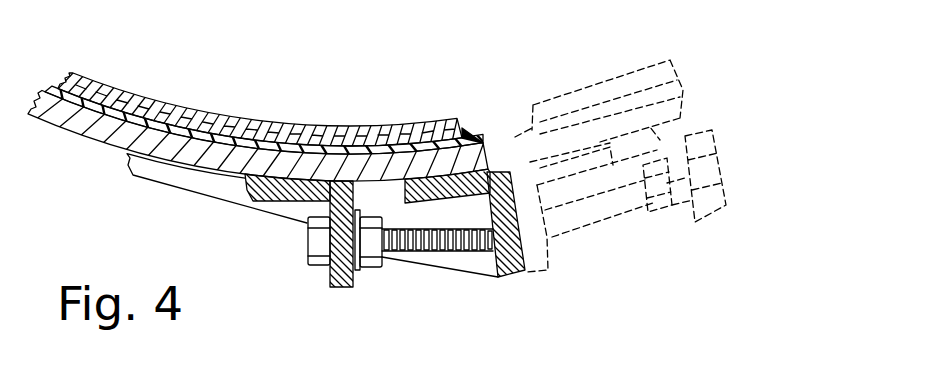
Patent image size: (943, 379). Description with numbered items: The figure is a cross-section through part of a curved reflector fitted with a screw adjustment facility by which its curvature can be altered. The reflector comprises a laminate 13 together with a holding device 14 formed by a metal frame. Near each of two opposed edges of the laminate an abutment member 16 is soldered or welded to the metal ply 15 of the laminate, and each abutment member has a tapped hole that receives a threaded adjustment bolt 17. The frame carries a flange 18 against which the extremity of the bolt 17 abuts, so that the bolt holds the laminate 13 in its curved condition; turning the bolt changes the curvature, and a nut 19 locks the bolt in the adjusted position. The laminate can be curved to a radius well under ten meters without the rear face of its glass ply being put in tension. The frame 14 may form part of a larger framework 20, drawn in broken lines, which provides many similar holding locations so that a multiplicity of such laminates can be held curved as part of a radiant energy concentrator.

The laminate 13 is at (222, 114).
The holding device 14 is at (483, 267).
The metal ply 15 is at (78, 128).
The abutment member 16 is at (343, 286).
The threaded adjustment bolt 17 is at (313, 242).
The flange 18 is at (508, 253).
The nut 19 is at (368, 248).
The larger framework 20 is at (545, 248).